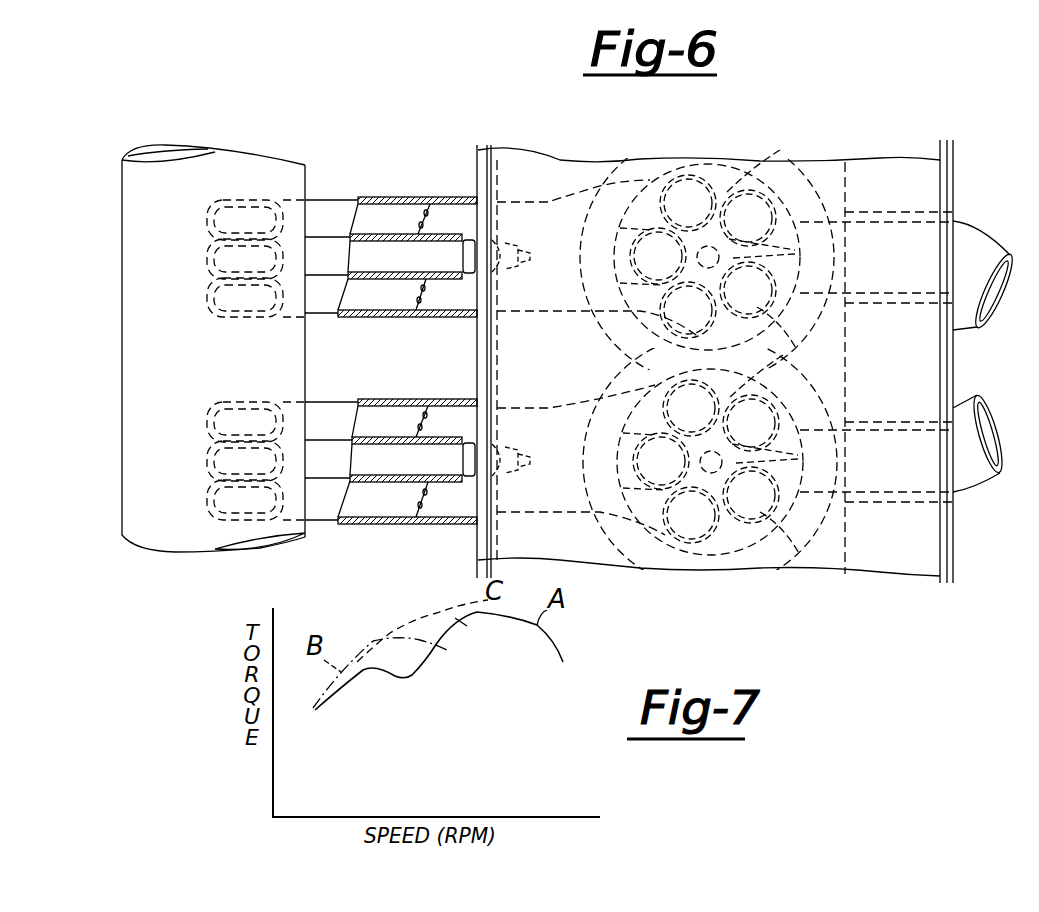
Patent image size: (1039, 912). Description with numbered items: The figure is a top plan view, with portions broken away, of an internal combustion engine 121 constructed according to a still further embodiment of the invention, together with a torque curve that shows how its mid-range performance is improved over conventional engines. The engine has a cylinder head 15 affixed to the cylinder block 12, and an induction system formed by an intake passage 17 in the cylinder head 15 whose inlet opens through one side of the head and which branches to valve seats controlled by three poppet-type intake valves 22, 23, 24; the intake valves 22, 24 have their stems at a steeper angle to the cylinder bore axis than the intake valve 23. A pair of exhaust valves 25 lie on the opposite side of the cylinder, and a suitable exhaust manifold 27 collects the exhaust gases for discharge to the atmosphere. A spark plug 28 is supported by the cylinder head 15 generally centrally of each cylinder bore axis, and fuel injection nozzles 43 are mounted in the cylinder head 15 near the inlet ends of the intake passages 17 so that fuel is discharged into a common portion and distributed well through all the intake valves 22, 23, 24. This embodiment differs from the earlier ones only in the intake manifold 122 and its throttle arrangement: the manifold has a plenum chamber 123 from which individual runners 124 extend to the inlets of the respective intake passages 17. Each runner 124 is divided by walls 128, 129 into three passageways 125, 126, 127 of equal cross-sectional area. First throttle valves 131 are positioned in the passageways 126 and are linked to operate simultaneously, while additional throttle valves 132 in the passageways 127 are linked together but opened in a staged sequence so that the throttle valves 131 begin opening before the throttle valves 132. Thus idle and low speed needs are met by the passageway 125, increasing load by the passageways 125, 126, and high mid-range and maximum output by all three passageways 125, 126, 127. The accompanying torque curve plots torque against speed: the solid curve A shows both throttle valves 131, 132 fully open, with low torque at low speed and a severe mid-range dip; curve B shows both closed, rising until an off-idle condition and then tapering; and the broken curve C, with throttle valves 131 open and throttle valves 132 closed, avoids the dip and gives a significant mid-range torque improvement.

The internal combustion engine 121 is at (782, 114).
The intake manifold 122 is at (122, 302).
The plenum chamber 123 is at (122, 233).
The runners 124 is at (343, 200).
The passageway 125 is at (404, 272).
The passageway 126 is at (394, 309).
The passageway 127 is at (404, 234).
The wall 128 is at (350, 274).
The wall 129 is at (352, 236).
The first throttle valves 131 is at (421, 317).
The additional throttle valves 132 is at (418, 200).
The fuel injection nozzles 43 is at (453, 313).
The intake passage 17 is at (552, 202).
The intake valve 22 is at (680, 318).
The intake valve 23 is at (655, 256).
The intake valve 24 is at (680, 180).
The exhaust valves 25 is at (778, 162).
The spark plug 28 is at (733, 224).
The cylinder block 12 is at (828, 163).
The cylinder head 15 is at (851, 172).
The exhaust manifold 27 is at (908, 215).